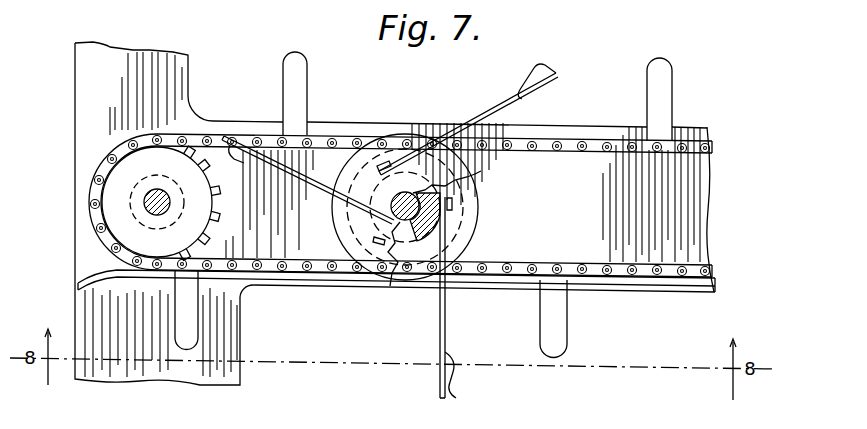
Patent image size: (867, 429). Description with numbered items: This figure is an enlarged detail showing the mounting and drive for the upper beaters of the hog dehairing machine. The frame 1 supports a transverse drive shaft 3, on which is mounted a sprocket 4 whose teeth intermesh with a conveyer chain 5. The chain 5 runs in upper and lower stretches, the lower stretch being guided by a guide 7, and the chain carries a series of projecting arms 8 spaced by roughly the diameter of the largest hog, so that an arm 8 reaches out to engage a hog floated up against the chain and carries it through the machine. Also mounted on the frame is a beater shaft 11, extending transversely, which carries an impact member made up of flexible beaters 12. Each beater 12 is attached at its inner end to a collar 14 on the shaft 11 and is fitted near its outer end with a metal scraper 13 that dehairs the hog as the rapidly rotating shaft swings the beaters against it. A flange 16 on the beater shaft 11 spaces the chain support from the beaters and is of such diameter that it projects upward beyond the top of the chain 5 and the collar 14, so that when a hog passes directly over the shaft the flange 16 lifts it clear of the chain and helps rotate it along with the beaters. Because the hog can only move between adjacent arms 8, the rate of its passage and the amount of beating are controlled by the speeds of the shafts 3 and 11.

The frame 1 is at (660, 211).
The drive shaft 3 is at (147, 211).
The sprocket 4 is at (122, 178).
The conveyer chain 5 is at (212, 136).
The guide 7 is at (80, 288).
The projecting arm 8 is at (300, 94).
The beater shaft 11 is at (385, 192).
The flexible beater 12 is at (312, 184).
The metal scraper 13 is at (519, 82).
The collar 14 is at (420, 250).
The flange 16 is at (472, 208).